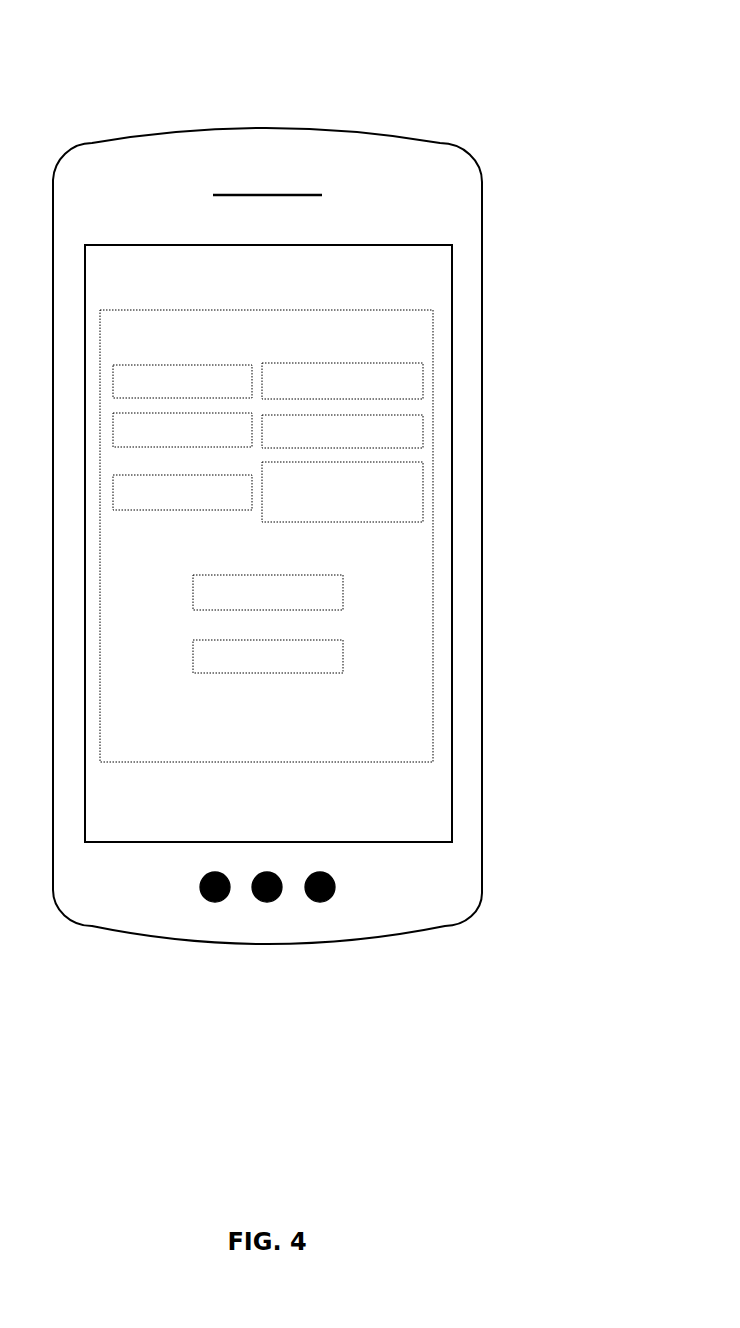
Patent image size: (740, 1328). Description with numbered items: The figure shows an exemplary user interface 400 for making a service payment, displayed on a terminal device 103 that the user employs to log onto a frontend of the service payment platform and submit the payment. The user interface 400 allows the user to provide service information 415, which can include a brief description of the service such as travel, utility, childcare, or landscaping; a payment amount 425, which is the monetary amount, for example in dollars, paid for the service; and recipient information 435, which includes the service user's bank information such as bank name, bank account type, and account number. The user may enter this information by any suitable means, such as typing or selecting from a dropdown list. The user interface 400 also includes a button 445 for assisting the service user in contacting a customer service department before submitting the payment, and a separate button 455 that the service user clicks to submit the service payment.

The terminal device 103 is at (407, 138).
The user interface 400 is at (266, 726).
The service information 415 is at (398, 379).
The payment amount 425 is at (413, 421).
The recipient information 435 is at (415, 483).
The button 445 is at (342, 597).
The button 455 is at (342, 663).